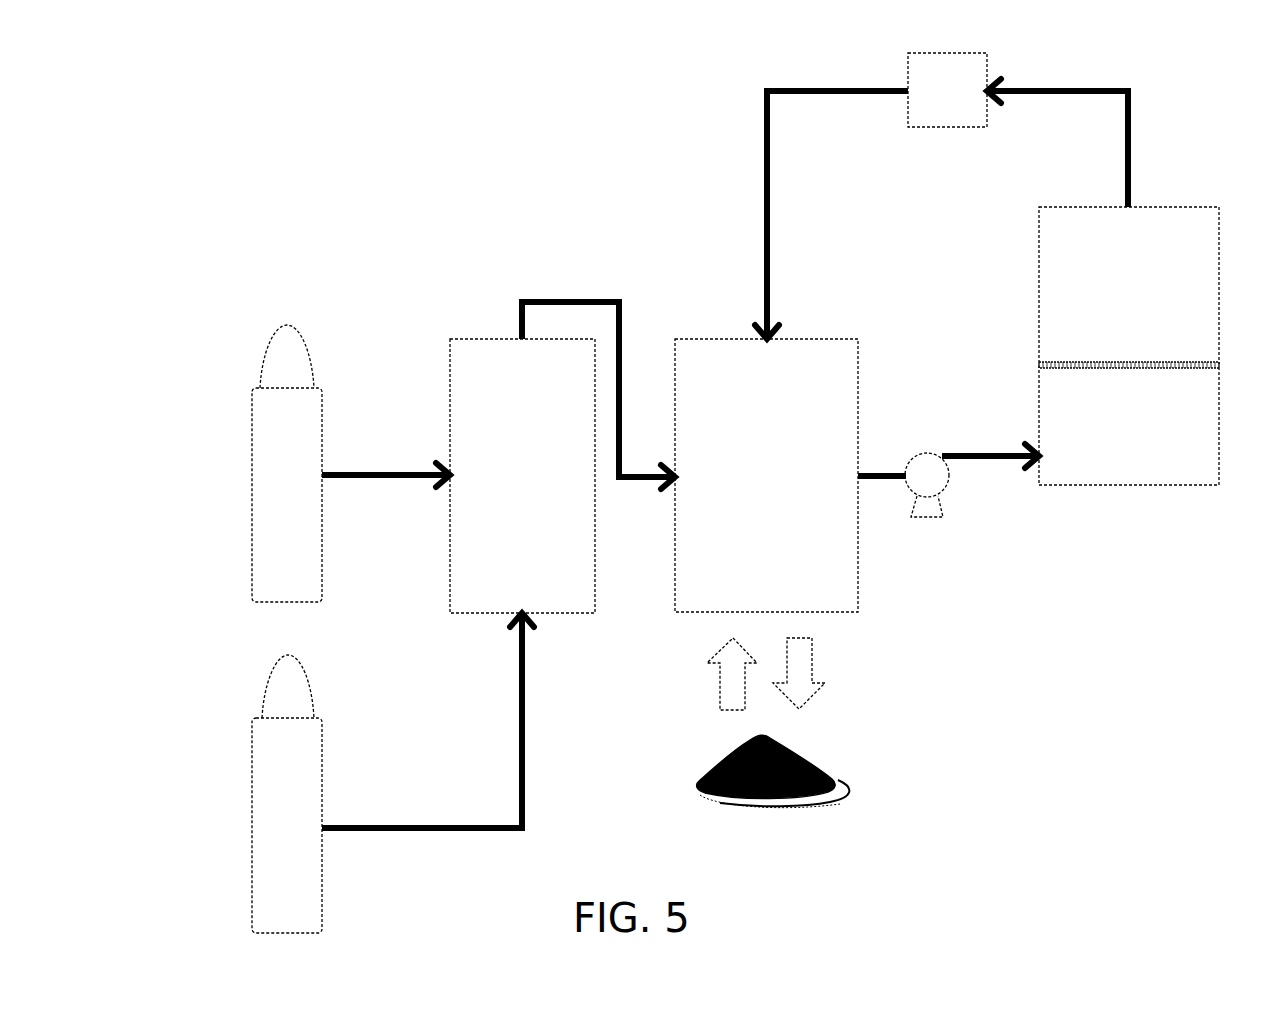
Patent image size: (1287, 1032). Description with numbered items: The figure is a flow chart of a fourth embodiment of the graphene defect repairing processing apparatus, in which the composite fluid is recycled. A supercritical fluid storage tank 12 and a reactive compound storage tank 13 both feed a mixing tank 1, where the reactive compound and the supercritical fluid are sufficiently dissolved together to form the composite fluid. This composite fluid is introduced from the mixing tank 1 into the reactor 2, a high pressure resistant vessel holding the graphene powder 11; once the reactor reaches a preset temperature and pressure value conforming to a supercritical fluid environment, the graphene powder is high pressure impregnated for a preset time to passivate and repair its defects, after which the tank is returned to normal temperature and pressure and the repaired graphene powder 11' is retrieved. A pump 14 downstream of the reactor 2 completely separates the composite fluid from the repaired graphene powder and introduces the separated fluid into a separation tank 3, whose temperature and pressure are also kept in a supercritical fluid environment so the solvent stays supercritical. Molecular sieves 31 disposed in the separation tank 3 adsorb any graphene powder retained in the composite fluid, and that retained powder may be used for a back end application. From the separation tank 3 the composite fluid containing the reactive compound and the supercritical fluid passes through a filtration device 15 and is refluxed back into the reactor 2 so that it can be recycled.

The mixing tank 1 is at (530, 384).
The reactor 2 is at (776, 384).
The separation tank 3 is at (1138, 252).
The graphene powder 11 is at (709, 760).
The repaired graphene powder 11' is at (773, 771).
The supercritical fluid storage tank 12 is at (282, 345).
The reactive compound storage tank 13 is at (277, 685).
The pump 14 is at (926, 453).
The filtration device 15 is at (967, 62).
The molecular sieves 31 is at (1220, 365).